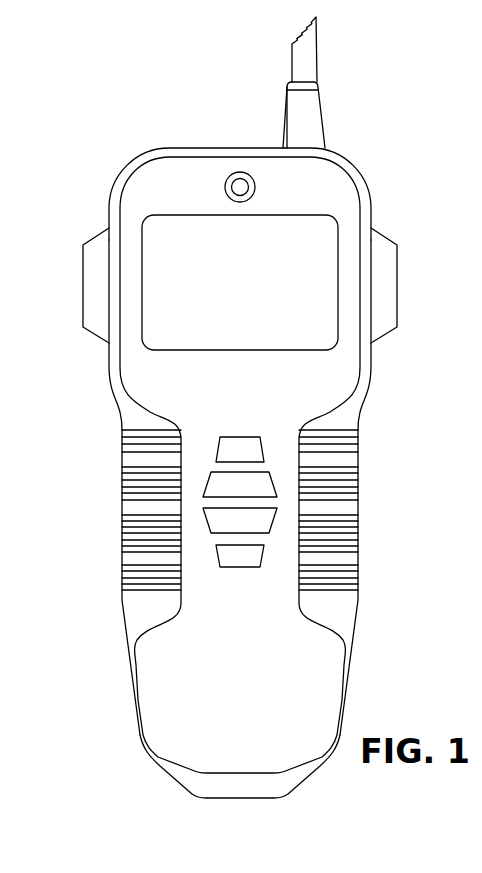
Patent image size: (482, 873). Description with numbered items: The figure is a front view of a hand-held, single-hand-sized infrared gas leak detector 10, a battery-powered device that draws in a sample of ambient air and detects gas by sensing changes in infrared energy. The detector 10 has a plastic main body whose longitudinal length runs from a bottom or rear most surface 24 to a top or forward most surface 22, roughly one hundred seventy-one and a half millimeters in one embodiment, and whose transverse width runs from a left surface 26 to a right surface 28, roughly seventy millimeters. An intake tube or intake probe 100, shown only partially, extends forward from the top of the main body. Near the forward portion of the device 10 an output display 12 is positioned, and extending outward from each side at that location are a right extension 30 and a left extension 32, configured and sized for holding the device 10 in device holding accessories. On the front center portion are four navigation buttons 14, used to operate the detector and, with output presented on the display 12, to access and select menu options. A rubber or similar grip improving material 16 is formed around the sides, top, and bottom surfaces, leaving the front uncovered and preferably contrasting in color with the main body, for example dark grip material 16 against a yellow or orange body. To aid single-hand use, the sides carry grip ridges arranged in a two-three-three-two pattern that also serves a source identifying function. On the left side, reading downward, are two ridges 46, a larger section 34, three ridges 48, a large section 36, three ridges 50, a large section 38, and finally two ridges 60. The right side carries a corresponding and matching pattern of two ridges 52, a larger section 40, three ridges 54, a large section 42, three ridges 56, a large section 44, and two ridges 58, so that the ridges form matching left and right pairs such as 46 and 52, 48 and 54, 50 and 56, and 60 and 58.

The gas leak detector 10 is at (128, 168).
The output display 12 is at (229, 293).
The navigation buttons 14 is at (242, 436).
The grip improving material 16 is at (190, 153).
The top or forward most surface 22 is at (242, 147).
The bottom or rear most surface 24 is at (242, 800).
The left surface 26 is at (108, 363).
The right surface 28 is at (372, 363).
The right extension 30 is at (397, 262).
The left extension 32 is at (83, 262).
The larger section 34 is at (122, 460).
The large section 36 is at (122, 512).
The large section 38 is at (122, 563).
The larger section 40 is at (358, 460).
The large section 42 is at (358, 512).
The large section 44 is at (358, 563).
The side grip ridges 46 is at (122, 435).
The side grip ridges 48 is at (122, 487).
The side grip ridges 50 is at (122, 537).
The side grip ridges 52 is at (358, 435).
The side grip ridges 54 is at (358, 487).
The side grip ridges 56 is at (358, 537).
The side grip ridges 58 is at (358, 590).
The side grip ridges 60 is at (122, 590).
The intake tube 100 is at (318, 48).